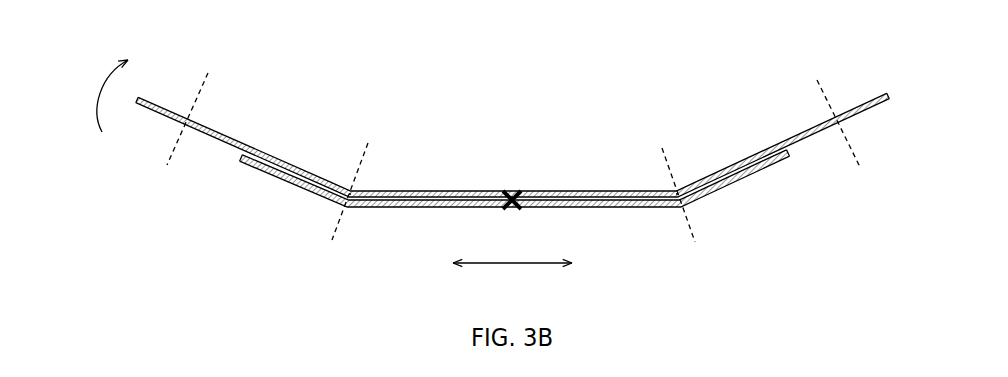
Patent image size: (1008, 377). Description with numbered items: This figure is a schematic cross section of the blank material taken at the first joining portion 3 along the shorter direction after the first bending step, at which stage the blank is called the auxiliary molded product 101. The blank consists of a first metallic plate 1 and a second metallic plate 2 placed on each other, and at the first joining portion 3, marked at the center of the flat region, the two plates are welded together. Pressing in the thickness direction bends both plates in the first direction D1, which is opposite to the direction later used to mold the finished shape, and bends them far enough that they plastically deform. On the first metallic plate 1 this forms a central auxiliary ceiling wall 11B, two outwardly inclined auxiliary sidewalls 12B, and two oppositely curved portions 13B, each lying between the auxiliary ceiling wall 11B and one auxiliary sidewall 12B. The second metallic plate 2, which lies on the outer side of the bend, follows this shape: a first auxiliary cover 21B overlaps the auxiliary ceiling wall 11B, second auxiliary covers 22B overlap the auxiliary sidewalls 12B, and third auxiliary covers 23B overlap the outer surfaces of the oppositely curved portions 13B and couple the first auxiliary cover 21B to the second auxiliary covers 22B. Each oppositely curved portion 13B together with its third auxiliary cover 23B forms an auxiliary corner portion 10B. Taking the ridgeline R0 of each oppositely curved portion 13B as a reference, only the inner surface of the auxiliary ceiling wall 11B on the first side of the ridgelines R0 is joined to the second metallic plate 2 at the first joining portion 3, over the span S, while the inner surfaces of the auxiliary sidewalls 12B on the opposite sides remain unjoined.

The auxiliary molded product 101 is at (868, 62).
The first metallic plate 1 is at (152, 100).
The second metallic plate 2 is at (256, 168).
The first joining portion 3 is at (512, 187).
The auxiliary corner portion 10B is at (347, 180).
The auxiliary ceiling wall 11B is at (540, 192).
The auxiliary sidewall 12B is at (258, 145).
The oppositely curved portion 13B is at (352, 190).
The first auxiliary cover 21B is at (598, 207).
The second auxiliary cover 22B is at (303, 188).
The third auxiliary cover 23B is at (347, 208).
The ridgeline R0 is at (513, 178).
The first direction D1 is at (92, 96).
The span S is at (512, 279).